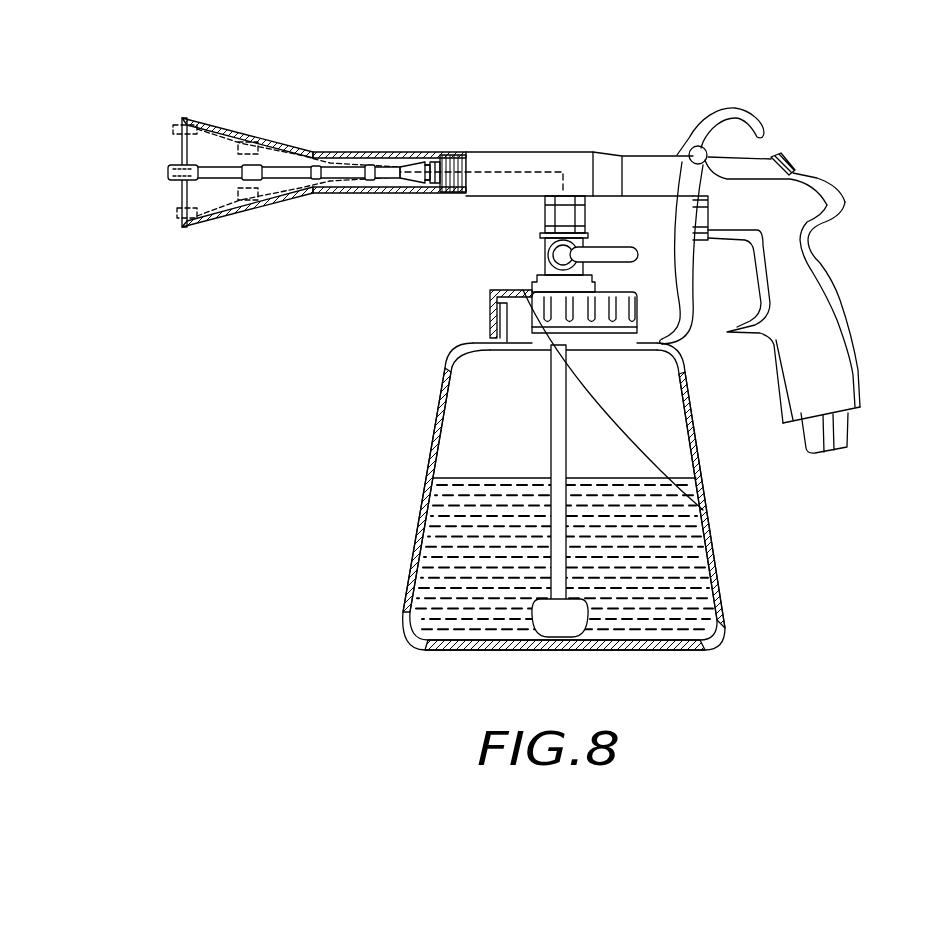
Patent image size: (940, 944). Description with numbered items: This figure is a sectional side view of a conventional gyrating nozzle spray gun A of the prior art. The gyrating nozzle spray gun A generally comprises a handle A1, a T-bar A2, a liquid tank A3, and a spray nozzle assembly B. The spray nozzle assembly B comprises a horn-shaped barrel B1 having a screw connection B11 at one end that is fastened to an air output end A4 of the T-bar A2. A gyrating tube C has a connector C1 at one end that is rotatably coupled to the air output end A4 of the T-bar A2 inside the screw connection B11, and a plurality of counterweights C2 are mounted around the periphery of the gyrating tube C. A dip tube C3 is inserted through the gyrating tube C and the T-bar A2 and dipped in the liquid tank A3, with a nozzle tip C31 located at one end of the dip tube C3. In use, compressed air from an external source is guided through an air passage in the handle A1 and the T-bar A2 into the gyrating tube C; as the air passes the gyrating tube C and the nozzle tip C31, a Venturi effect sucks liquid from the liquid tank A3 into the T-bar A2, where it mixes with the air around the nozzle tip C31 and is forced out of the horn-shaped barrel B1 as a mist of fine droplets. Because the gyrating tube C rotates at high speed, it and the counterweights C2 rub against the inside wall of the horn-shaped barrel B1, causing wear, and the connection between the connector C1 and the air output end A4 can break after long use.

The gyrating nozzle spray gun A is at (593, 103).
The handle A1 is at (818, 311).
The T-bar A2 is at (562, 170).
The liquid tank A3 is at (718, 560).
The air output end A4 is at (453, 168).
The spray nozzle assembly B is at (302, 146).
The horn-shaped barrel B1 is at (358, 150).
The screw connection B11 is at (443, 192).
The gyrating tube C is at (392, 175).
The connector C1 is at (437, 156).
The counterweights C2 is at (312, 181).
The dip tube C3 is at (220, 172).
The nozzle tip C31 is at (190, 170).